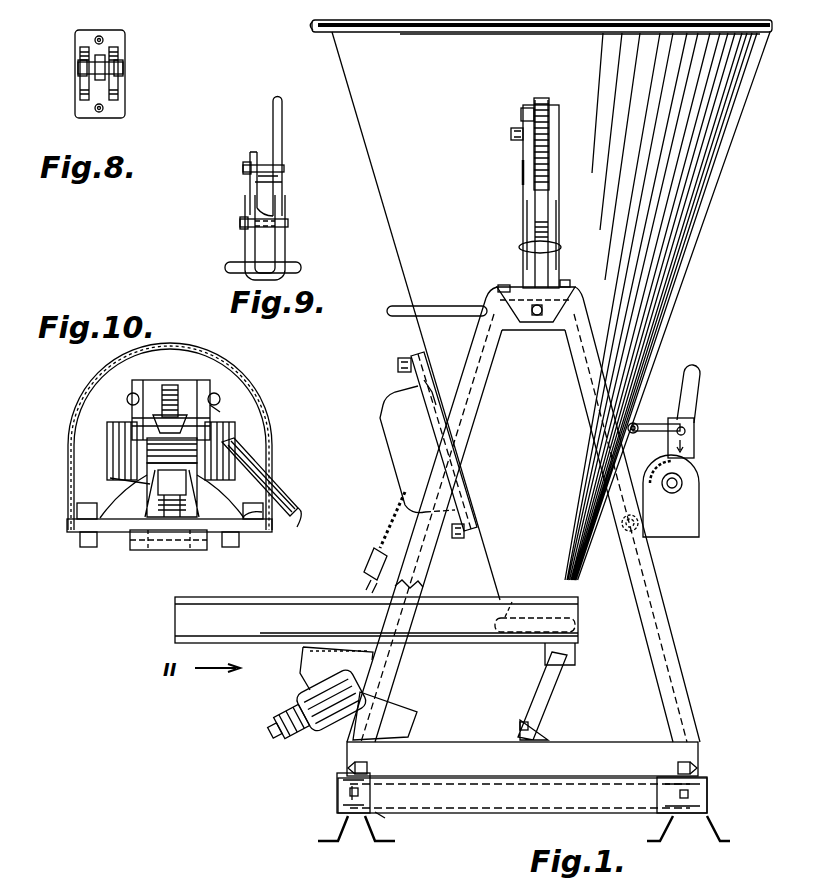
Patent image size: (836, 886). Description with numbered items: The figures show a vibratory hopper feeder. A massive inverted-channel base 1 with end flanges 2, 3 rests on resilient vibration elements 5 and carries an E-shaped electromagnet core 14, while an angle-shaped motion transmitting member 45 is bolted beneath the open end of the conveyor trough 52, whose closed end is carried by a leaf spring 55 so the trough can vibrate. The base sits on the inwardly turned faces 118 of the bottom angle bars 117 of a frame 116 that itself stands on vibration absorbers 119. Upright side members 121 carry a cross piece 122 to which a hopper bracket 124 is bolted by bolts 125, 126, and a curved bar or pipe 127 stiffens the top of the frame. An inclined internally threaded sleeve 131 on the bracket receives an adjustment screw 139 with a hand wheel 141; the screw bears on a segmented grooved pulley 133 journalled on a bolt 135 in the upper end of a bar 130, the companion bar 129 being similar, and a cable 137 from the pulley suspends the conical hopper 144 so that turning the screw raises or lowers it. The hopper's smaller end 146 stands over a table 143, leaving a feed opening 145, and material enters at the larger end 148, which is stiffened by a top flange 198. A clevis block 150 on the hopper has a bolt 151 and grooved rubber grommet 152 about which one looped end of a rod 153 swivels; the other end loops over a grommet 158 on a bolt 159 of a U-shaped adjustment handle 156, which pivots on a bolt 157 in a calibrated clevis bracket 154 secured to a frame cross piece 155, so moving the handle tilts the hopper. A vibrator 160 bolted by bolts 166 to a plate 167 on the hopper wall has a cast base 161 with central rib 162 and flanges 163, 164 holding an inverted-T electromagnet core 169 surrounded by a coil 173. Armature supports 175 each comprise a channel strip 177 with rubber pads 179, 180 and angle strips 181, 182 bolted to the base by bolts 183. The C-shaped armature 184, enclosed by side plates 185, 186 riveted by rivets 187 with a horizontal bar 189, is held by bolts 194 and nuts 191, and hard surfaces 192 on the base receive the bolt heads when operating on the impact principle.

In FIG. 1, the base 1 is at (460, 746).
In FIG. 1, the horizontal flange 2 is at (370, 775).
In FIG. 1, the horizontal flange 3 is at (676, 775).
In FIG. 1, the resilient vibration element 5 is at (352, 793).
In FIG. 1, the core 14 is at (318, 718).
In FIG. 1, the motion transmitting member 45 is at (306, 652).
In FIG. 1, the conveyor trough 52 is at (335, 604).
In FIG. 1, the leaf spring 55 is at (540, 696).
In FIG. 1, the frame 116 is at (668, 651).
In FIG. 1, the angle bar 117 is at (495, 812).
In FIG. 1, the inwardly turned face 118 is at (390, 812).
In FIG. 1, the vibration absorber 119 is at (338, 822).
In FIG. 1, the side member 121 is at (695, 566).
In FIG. 1, the cross piece 122 is at (502, 305).
In FIG. 1, the hopper bracket 124 is at (535, 208).
In FIG. 1, the bolt 125 is at (503, 285).
In FIG. 1, the bolt 126 is at (537, 318).
In FIG. 1, the curved bar or pipe 127 is at (407, 316).
In FIG. 1, the bar 129 is at (524, 172).
In FIG. 1, the bar 130 is at (560, 208).
In FIG. 1, the internally threaded sleeve 131 is at (543, 197).
In FIG. 1, the segmented grooved pulley 133 is at (524, 112).
In FIG. 1, the bolt 135 is at (511, 133).
In FIG. 1, the cable 137 is at (541, 100).
In FIG. 1, the adjustment screw 139 is at (550, 231).
In FIG. 1, the hand wheel 141 is at (520, 248).
In FIG. 1, the table or platform 143 is at (535, 641).
In FIG. 1, the conical hopper 144 is at (545, 441).
In FIG. 1, the feed opening 145 is at (578, 622).
In FIG. 1, the smaller end 146 is at (516, 603).
In FIG. 1, the larger end 148 is at (353, 41).
In FIG. 8, the clevis block 150 is at (126, 40).
In FIG. 1, the clevis block 150 is at (632, 435).
In FIG. 8, the bolt 151 is at (124, 64).
In FIG. 8, the grooved rubber grommet 152 is at (103, 58).
In FIG. 8, the rod 153 is at (90, 80).
In FIG. 9, the rod 153 is at (272, 182).
In FIG. 1, the rod 153 is at (650, 424).
In FIG. 9, the clevis bracket 154 is at (286, 243).
In FIG. 1, the clevis bracket 154 is at (700, 518).
In FIG. 9, the cross piece 155 is at (291, 264).
In FIG. 1, the cross piece 155 is at (624, 531).
In FIG. 9, the adjustment handle 156 is at (283, 131).
In FIG. 1, the adjustment handle 156 is at (694, 388).
In FIG. 9, the bolt 157 is at (288, 222).
In FIG. 1, the bolt 157 is at (683, 483).
In FIG. 9, the grommet 158 is at (258, 152).
In FIG. 9, the bolt 159 is at (285, 170).
In FIG. 10, the vibrator 160 is at (72, 420).
In FIG. 1, the vibrator 160 is at (390, 441).
In FIG. 10, the base 161 is at (82, 540).
In FIG. 10, the central rib 162 is at (146, 545).
In FIG. 10, the flange 163 is at (68, 528).
In FIG. 10, the flange 164 is at (240, 540).
In FIG. 1, the bolt 166 is at (404, 364).
In FIG. 1, the plate 167 is at (437, 385).
In FIG. 10, the electromagnet core 169 is at (236, 496).
In FIG. 10, the coil 173 is at (107, 457).
In FIG. 10, the armature support 175 is at (112, 479).
In FIG. 10, the channel strip 177 is at (197, 470).
In FIG. 10, the rubber pad 179 is at (116, 497).
In FIG. 10, the rubber pad 180 is at (222, 500).
In FIG. 10, the angle strip 181 is at (252, 520).
In FIG. 10, the angle strip 182 is at (87, 520).
In FIG. 10, the bolt 183 is at (262, 512).
In FIG. 10, the armature 184 is at (178, 380).
In FIG. 10, the side plate 185 is at (127, 399).
In FIG. 10, the side plate 186 is at (220, 399).
In FIG. 10, the rivet 187 is at (214, 407).
In FIG. 10, the horizontal bar 189 is at (147, 445).
In FIG. 10, the nut 191 is at (185, 415).
In FIG. 10, the hard surface 192 is at (178, 550).
In FIG. 10, the bolt 194 is at (162, 395).
In FIG. 1, the top flange 198 is at (312, 25).